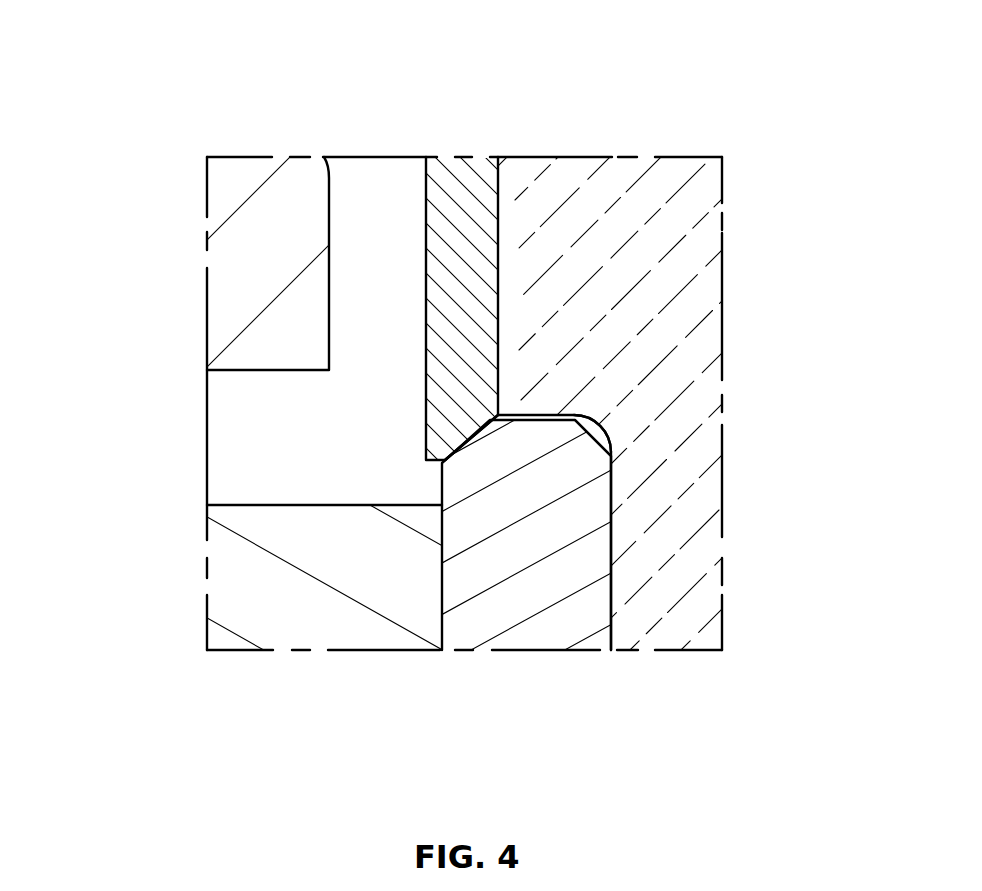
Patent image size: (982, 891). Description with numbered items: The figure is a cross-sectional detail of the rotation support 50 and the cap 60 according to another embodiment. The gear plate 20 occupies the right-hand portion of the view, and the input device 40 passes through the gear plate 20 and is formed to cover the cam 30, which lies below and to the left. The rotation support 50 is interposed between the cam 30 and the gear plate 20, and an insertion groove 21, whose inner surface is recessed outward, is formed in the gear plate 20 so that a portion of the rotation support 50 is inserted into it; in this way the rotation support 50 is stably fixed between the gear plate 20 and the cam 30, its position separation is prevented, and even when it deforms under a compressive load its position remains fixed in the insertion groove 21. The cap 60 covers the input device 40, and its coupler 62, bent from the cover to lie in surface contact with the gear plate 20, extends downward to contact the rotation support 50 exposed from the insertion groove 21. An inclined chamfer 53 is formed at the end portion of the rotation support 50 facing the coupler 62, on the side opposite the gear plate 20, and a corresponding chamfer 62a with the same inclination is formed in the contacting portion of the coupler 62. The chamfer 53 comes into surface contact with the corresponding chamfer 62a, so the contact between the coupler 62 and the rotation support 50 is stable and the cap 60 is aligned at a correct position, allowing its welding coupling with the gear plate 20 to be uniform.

The gear plate 20 is at (687, 373).
The insertion groove 21 is at (598, 418).
The cam 30 is at (322, 593).
The input device 40 is at (268, 195).
The rotation support 50 is at (537, 595).
The chamfer 53 is at (468, 450).
The cap 60 is at (435, 275).
The coupler 62 is at (461, 197).
The corresponding chamfer 62a is at (447, 437).